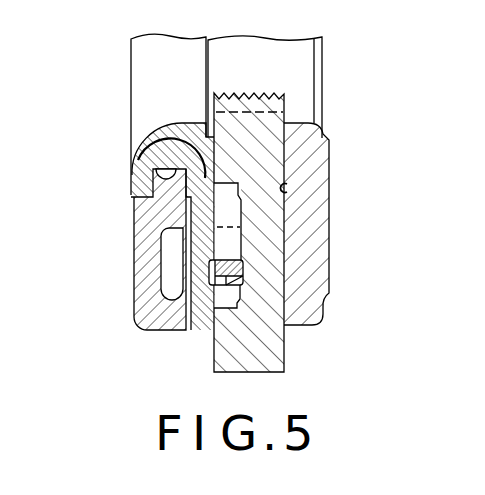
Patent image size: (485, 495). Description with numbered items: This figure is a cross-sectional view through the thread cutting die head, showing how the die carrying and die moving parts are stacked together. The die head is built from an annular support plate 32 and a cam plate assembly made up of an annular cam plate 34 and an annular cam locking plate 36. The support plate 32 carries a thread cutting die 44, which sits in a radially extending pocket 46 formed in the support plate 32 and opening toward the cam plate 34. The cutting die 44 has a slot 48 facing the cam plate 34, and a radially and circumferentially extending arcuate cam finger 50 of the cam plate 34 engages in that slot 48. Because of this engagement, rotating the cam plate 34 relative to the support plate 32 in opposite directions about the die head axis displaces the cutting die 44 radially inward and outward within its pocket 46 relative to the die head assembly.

The annular support plate 32 is at (317, 160).
The annular cam plate 34 is at (160, 137).
The annular cam locking plate 36 is at (147, 217).
The thread cutting die 44 is at (267, 337).
The radially extending pocket 46 is at (283, 187).
The slot 48 is at (228, 288).
The arcuate cam finger 50 is at (232, 271).